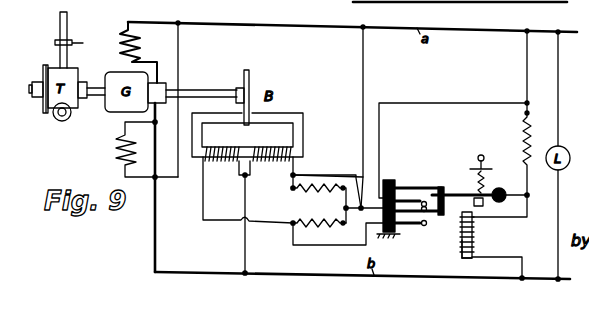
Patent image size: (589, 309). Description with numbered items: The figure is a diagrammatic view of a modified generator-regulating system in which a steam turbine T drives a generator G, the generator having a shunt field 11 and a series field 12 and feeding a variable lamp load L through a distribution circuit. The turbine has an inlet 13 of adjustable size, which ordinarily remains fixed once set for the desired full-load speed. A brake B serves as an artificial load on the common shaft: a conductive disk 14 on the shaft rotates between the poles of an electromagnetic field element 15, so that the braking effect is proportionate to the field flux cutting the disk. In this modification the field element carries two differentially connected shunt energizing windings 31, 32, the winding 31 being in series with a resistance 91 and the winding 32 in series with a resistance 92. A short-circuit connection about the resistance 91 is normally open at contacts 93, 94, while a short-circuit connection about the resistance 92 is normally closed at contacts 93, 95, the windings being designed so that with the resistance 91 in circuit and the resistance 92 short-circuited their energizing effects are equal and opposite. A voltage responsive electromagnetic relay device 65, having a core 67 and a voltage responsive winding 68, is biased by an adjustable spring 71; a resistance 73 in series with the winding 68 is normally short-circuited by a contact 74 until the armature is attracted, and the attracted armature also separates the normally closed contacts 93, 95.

The shunt field 11 is at (114, 148).
The series field 12 is at (114, 38).
The inlet 13 is at (67, 18).
The disk 14 is at (251, 80).
The electromagnetic field element 15 is at (247, 135).
The shunt energizing winding 31 is at (219, 161).
The shunt energizing winding 32 is at (269, 162).
The resistance 91 is at (336, 219).
The resistance 92 is at (317, 193).
The contact 93 is at (443, 216).
The contact 94 is at (411, 226).
The contact 95 is at (418, 186).
The contact 74 is at (442, 192).
The adjustable spring 71 is at (468, 191).
The resistance 73 is at (522, 140).
The voltage responsive electromagnetic relay device 65 is at (479, 235).
The core 67 is at (470, 259).
The voltage responsive winding 68 is at (461, 246).